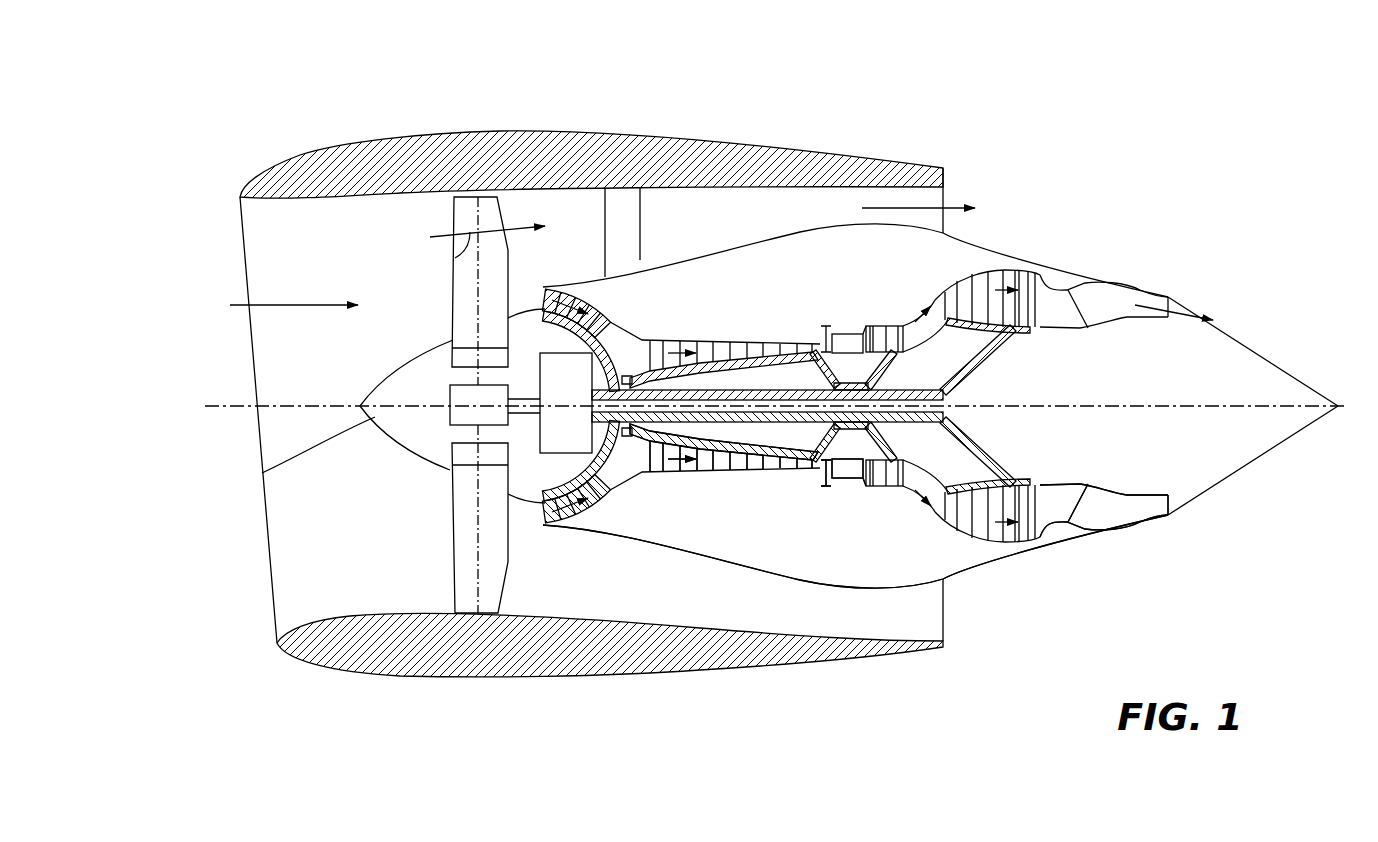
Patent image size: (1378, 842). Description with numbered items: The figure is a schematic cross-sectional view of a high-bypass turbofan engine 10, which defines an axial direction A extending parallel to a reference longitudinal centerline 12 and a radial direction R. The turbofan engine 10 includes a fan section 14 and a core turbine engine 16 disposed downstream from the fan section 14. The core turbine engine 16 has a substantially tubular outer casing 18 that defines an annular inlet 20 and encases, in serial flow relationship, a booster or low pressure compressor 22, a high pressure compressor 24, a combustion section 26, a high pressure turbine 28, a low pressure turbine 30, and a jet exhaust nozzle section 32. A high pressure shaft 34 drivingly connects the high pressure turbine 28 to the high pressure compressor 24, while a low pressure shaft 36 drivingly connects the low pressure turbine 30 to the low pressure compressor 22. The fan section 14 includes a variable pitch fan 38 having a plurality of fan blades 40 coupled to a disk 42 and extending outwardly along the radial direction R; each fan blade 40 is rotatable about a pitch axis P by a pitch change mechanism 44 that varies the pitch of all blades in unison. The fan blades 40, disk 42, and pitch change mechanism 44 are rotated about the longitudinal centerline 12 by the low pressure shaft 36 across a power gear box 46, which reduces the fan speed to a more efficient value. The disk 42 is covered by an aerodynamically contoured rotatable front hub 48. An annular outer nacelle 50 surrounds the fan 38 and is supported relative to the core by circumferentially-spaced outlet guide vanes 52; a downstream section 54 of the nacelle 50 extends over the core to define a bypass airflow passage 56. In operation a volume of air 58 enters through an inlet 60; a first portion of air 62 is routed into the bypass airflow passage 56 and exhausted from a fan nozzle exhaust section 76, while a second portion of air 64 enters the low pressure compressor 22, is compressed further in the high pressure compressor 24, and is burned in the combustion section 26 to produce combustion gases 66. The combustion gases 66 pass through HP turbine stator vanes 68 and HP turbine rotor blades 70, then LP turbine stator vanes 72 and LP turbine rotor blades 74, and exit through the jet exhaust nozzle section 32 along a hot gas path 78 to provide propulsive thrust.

The turbofan engine 10 is at (1088, 148).
The longitudinal centerline 12 is at (1108, 405).
The fan section 14 is at (410, 215).
The core turbine engine 16 is at (762, 298).
The outer casing 18 is at (800, 572).
The annular inlet 20 is at (545, 513).
The low pressure compressor 22 is at (561, 419).
The high pressure compressor 24 is at (672, 462).
The combustion section 26 is at (842, 472).
The high pressure turbine 28 is at (983, 458).
The low pressure turbine 30 is at (1028, 538).
The jet exhaust nozzle section 32 is at (1088, 514).
The high pressure shaft 34 is at (870, 383).
The low pressure shaft 36 is at (985, 360).
The variable pitch fan 38 is at (417, 456).
The fan blades 40 is at (450, 555).
The disk 42 is at (453, 362).
The pitch change mechanism 44 is at (450, 388).
The power gear box 46 is at (633, 340).
The front hub 48 is at (262, 473).
The outer nacelle 50 is at (498, 680).
The outlet guide vanes 52 is at (642, 215).
The downstream section 54 is at (887, 158).
The bypass airflow passage 56 is at (790, 227).
The volume of air 58 is at (293, 303).
The inlet 60 is at (273, 615).
The first portion of air 62 is at (455, 258).
The second portion of air 64 is at (533, 297).
The combustion gases 66 is at (883, 323).
The HP turbine stator vanes 68 is at (857, 470).
The HP turbine rotor blades 70 is at (950, 437).
The LP turbine stator vanes 72 is at (950, 510).
The LP turbine rotor blades 74 is at (960, 520).
The fan nozzle exhaust section 76 is at (935, 192).
The hot gas path 78 is at (922, 300).
The pitch axis P is at (533, 200).
The radial direction R is at (163, 548).
The axial direction A is at (836, 737).